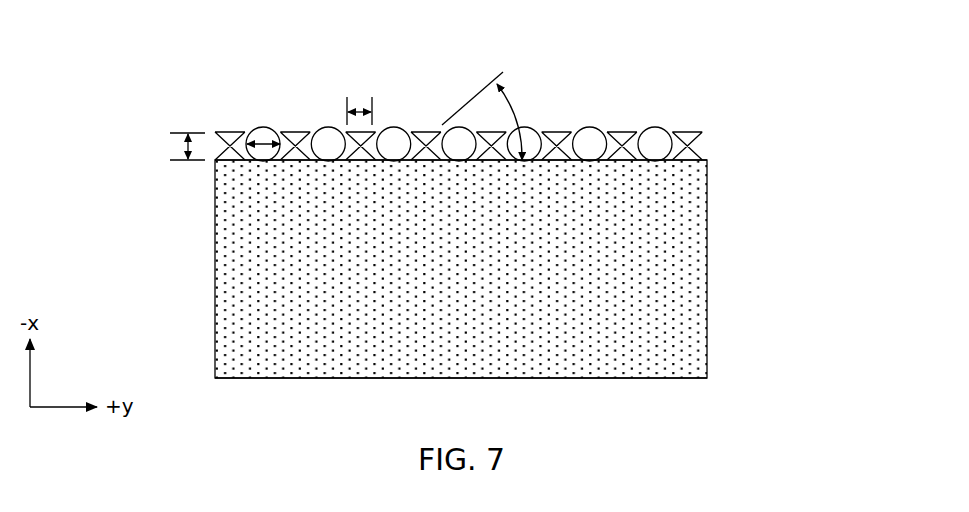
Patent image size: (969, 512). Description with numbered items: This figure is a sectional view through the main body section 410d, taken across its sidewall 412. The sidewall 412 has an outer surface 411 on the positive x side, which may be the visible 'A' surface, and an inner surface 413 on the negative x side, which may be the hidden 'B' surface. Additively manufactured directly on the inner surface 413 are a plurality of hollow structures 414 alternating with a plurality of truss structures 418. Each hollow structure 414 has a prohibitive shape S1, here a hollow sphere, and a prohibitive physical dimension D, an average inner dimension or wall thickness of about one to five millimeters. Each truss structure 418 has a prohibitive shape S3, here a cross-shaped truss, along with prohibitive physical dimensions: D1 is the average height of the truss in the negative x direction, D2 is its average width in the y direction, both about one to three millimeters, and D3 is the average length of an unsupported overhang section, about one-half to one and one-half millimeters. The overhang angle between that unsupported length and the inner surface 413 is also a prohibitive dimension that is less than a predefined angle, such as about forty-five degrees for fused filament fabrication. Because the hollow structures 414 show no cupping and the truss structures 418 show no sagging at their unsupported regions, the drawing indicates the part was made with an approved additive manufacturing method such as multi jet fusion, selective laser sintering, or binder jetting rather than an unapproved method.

The main body section 410d is at (539, 211).
The outer surface 411 is at (668, 378).
The sidewall 412 is at (713, 252).
The inner surface 413 is at (688, 162).
The hollow structures 414 is at (656, 127).
The truss structures 418 is at (690, 131).
The prohibitive shape S1 is at (651, 121).
The prohibitive shape S3 is at (221, 128).
The prohibitive physical dimension D is at (263, 141).
The prohibitive physical dimension D1 is at (186, 148).
The prohibitive physical dimension D2 is at (361, 108).
The prohibitive physical dimension D3 is at (374, 142).